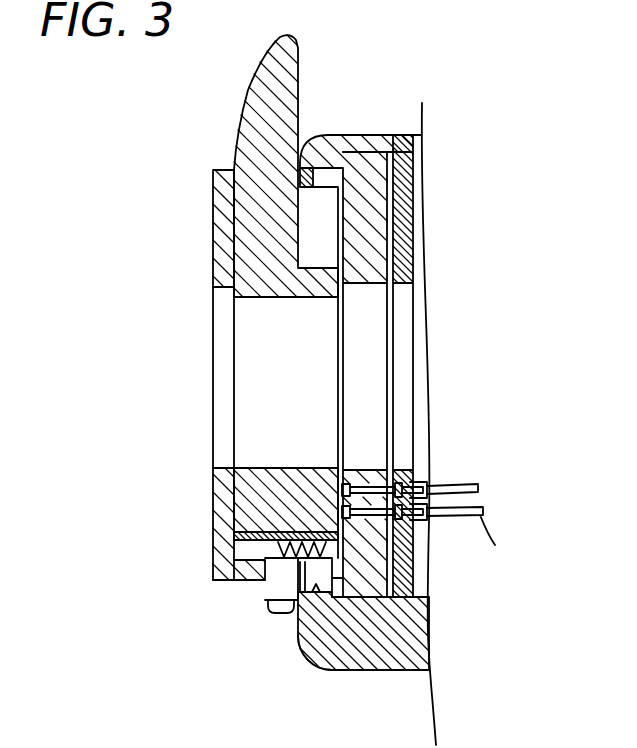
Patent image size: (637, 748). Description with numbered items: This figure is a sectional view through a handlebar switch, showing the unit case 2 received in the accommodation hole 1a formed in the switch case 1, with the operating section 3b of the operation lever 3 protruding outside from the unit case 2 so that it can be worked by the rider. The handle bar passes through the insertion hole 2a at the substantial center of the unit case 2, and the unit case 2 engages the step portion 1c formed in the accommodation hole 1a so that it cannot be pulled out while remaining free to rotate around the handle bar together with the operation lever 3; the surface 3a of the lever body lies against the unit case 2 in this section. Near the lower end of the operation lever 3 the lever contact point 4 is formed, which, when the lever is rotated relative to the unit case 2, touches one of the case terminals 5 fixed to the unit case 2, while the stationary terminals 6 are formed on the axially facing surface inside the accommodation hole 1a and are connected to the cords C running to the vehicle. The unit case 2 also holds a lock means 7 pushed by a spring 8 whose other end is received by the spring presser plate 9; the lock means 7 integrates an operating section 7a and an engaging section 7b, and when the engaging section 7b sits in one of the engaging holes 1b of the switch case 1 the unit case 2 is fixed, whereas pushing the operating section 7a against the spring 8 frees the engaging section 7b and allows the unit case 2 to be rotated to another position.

The switch case 1 is at (313, 650).
The accommodation hole 1a is at (390, 135).
The engaging holes 1b is at (300, 628).
The step portion 1c is at (352, 152).
The unit case 2 is at (220, 255).
The insertion hole 2a is at (232, 287).
The operation lever 3 is at (237, 217).
The lower surface of bezel 3a is at (256, 298).
The operating section 3b is at (250, 97).
The lever contact point 4 is at (355, 512).
The case terminals 5 is at (408, 500).
The stationary terminals 6 is at (428, 510).
The lock means 7 is at (275, 588).
The operating section 7a is at (281, 608).
The engaging section 7b is at (322, 600).
The spring 8 is at (262, 554).
The spring presser plate 9 is at (262, 537).
The cords C is at (485, 530).